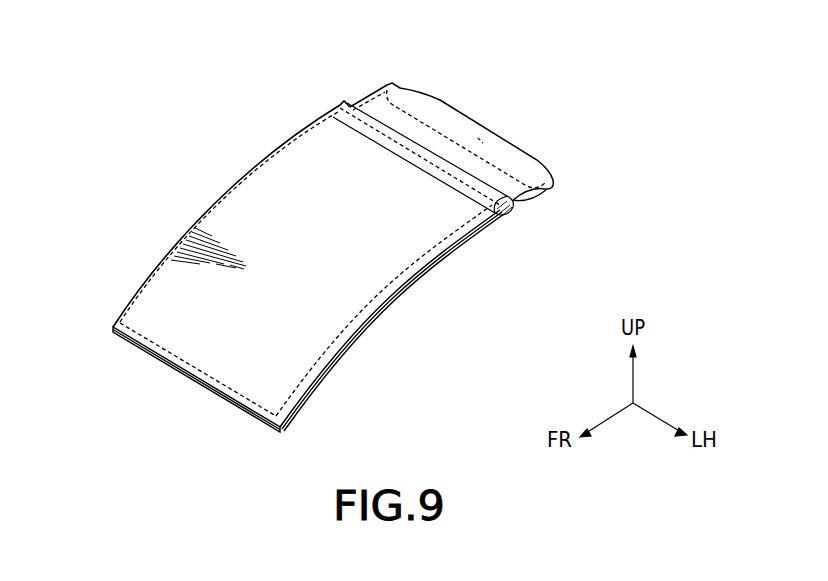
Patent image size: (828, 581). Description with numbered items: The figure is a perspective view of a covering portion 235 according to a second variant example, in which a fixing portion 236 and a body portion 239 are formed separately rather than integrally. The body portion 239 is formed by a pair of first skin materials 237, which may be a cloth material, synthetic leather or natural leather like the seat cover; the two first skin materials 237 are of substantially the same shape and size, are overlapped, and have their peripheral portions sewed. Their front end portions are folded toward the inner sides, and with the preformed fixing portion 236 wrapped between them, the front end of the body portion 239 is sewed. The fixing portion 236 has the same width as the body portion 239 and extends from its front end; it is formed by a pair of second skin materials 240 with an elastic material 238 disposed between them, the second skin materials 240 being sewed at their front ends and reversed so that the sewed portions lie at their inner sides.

The covering portion 235 is at (223, 87).
The fixing portion 236 is at (459, 101).
The first skin material 237 is at (247, 217).
The elastic material 238 is at (480, 140).
The body portion 239 is at (154, 258).
The second skin material 240 is at (374, 112).